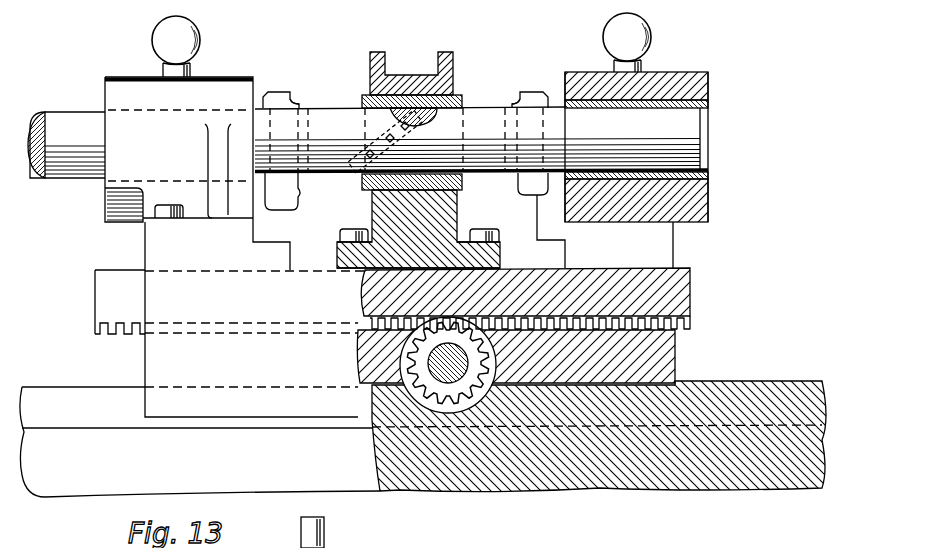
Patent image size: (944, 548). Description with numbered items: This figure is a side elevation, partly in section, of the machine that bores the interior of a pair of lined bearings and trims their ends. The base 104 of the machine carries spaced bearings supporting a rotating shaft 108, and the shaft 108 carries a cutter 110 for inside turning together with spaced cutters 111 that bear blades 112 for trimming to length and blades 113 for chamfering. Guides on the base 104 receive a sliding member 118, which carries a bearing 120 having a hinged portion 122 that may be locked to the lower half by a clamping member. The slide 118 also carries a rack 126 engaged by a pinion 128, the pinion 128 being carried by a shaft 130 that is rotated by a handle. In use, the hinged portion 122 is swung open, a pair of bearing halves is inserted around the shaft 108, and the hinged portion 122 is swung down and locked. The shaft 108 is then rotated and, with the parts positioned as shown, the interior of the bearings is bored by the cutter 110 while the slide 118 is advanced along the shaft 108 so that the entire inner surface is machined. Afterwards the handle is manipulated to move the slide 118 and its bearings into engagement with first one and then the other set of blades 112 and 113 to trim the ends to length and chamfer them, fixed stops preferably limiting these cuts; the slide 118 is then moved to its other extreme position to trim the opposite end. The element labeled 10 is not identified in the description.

The bearing block 10 is at (372, 194).
The base 104 is at (744, 382).
The rotating shaft 108 is at (339, 120).
The cutter 110 is at (446, 99).
The spaced cutters 111 is at (283, 93).
The blades 112 is at (298, 201).
The blades 113 is at (297, 102).
The slide member 118 is at (683, 287).
The bearing 120 is at (382, 213).
The hinged portion 122 is at (424, 78).
The rack 126 is at (696, 320).
The pinion 128 is at (472, 382).
The shaft 130 is at (430, 363).